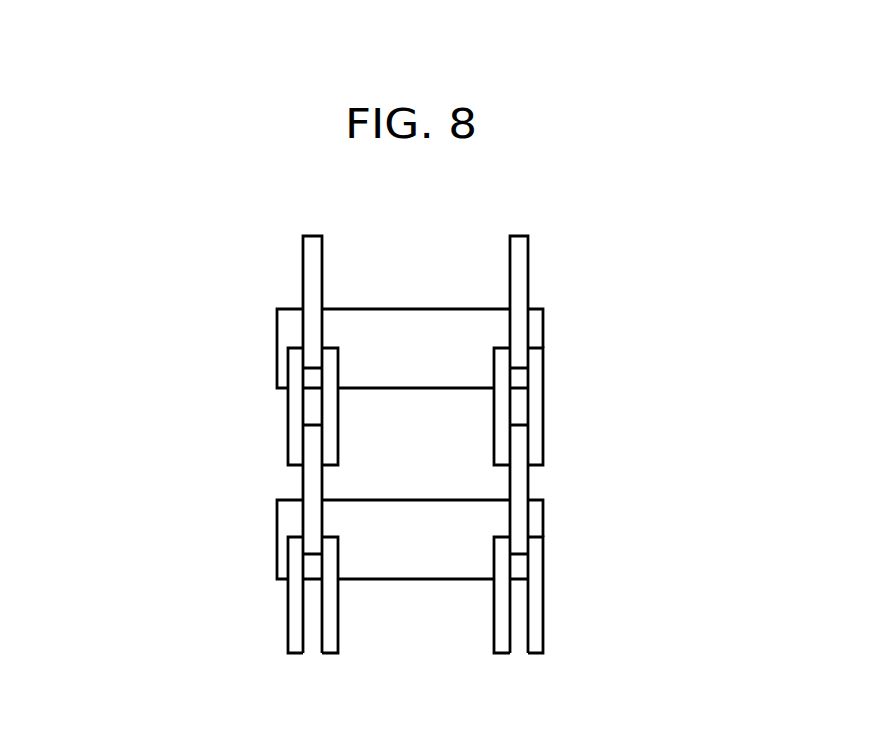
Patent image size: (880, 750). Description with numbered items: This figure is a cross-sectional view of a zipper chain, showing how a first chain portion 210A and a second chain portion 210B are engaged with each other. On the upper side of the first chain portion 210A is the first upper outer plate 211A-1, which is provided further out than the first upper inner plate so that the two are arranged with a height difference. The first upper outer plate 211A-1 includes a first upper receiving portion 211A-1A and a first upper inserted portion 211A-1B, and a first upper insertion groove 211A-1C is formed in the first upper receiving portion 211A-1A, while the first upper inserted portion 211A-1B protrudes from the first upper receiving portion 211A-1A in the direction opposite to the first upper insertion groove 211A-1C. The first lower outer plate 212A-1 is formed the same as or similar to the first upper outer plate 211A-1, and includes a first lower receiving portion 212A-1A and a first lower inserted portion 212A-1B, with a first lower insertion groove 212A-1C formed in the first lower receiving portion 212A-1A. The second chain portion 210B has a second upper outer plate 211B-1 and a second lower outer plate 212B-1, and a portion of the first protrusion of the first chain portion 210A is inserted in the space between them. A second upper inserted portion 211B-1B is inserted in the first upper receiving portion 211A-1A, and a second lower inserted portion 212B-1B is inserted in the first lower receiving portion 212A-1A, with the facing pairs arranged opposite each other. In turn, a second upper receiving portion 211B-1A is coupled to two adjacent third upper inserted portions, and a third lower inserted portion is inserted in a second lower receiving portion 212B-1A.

The first chain portion 210A is at (443, 297).
The second chain portion 210B is at (548, 512).
The first upper outer plate 211A-1 is at (142, 254).
The first upper receiving portion 211A-1A is at (297, 403).
The first upper inserted portion 211A-1B is at (312, 271).
The first upper insertion groove 211A-1C is at (312, 413).
The second upper outer plate 211B-1 is at (142, 522).
The second upper receiving portion 211B-1A is at (298, 602).
The second upper inserted portion 211B-1B is at (313, 519).
The first lower outer plate 212A-1 is at (692, 254).
The first lower receiving portion 212A-1A is at (537, 403).
The first lower inserted portion 212A-1B is at (518, 272).
The first lower insertion groove 212A-1C is at (518, 413).
The second lower outer plate 212B-1 is at (692, 522).
The second lower receiving portion 212B-1A is at (535, 601).
The second lower inserted portion 212B-1B is at (517, 518).